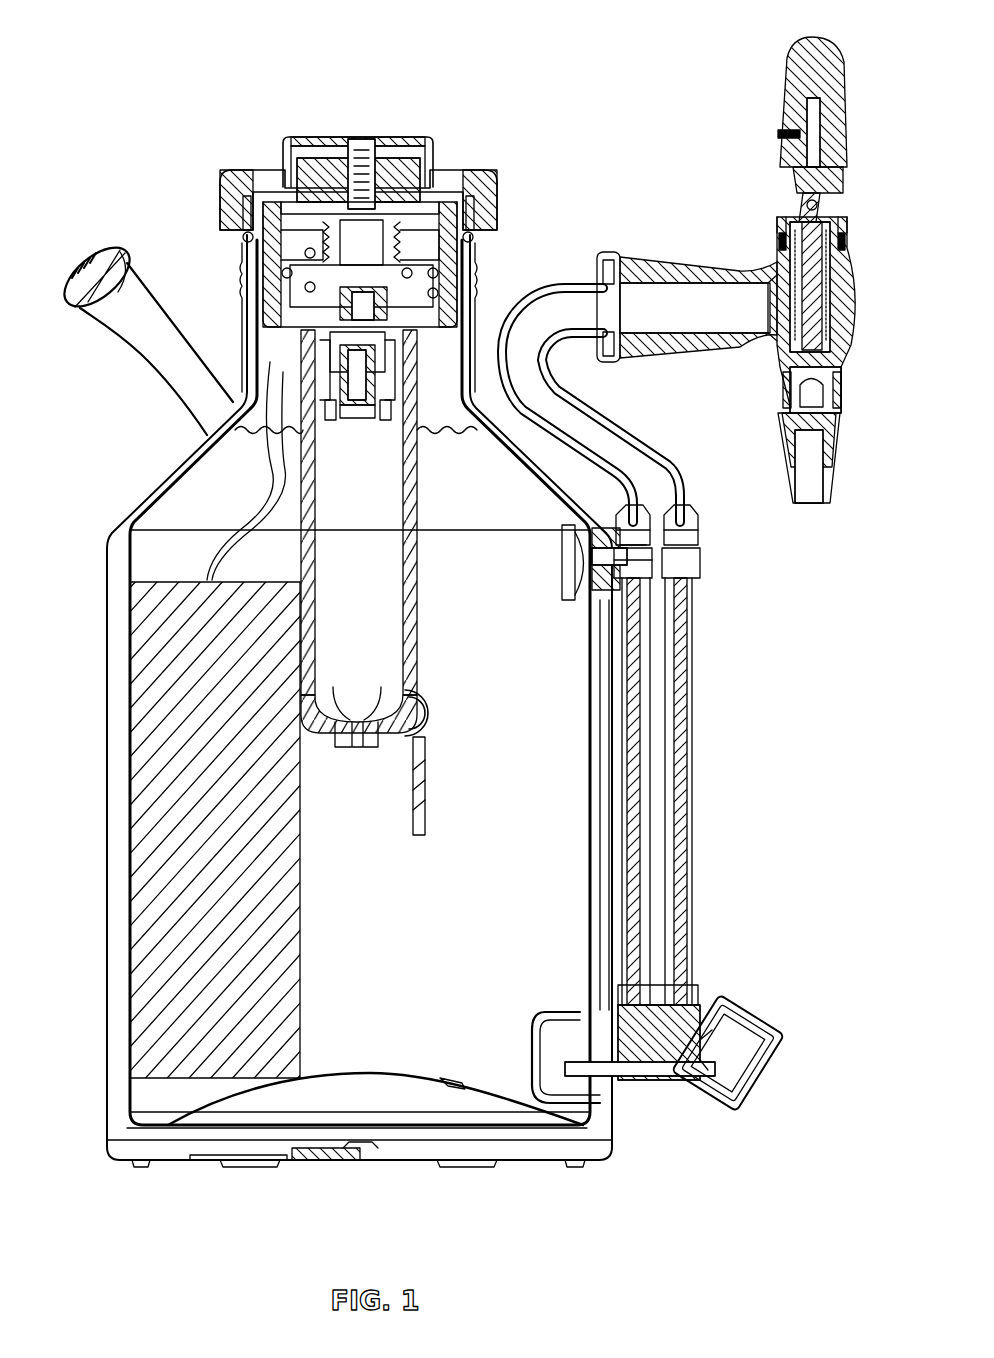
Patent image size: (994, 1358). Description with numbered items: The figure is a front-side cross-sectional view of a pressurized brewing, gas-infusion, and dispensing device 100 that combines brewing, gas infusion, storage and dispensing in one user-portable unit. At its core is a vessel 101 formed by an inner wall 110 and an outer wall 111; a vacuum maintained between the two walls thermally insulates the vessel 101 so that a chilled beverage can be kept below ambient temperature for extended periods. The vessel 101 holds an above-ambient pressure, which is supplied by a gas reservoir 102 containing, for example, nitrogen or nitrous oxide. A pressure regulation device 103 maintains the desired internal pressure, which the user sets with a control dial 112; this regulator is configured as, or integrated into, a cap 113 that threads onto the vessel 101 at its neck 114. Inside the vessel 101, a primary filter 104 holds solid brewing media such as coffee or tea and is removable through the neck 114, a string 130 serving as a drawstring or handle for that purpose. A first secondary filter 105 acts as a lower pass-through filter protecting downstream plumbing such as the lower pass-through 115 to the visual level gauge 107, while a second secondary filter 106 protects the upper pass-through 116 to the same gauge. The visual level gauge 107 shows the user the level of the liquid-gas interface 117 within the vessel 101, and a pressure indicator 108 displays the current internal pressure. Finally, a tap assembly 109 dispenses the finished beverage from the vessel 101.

The pressurized brewing, gas-infusion, and dispensing device 100 is at (141, 85).
The vessel 101 is at (101, 521).
The gas reservoir 102 is at (375, 558).
The pressure regulation device 103 is at (432, 183).
The primary filter 104 is at (303, 904).
The first secondary filter 105 is at (540, 1024).
The second secondary filter 106 is at (562, 571).
The visual level gauge 107 is at (690, 707).
The pressure indicator 108 is at (757, 1032).
The tap assembly 109 is at (720, 93).
The inner wall 110 is at (150, 493).
The outer wall 111 is at (170, 461).
The control dial 112 is at (320, 133).
The cap 113 is at (245, 170).
The neck 114 is at (476, 300).
The lower pass-through 115 is at (624, 1080).
The upper pass-through 116 is at (612, 563).
The liquid-gas interface 117 is at (440, 440).
The string 130 is at (244, 496).